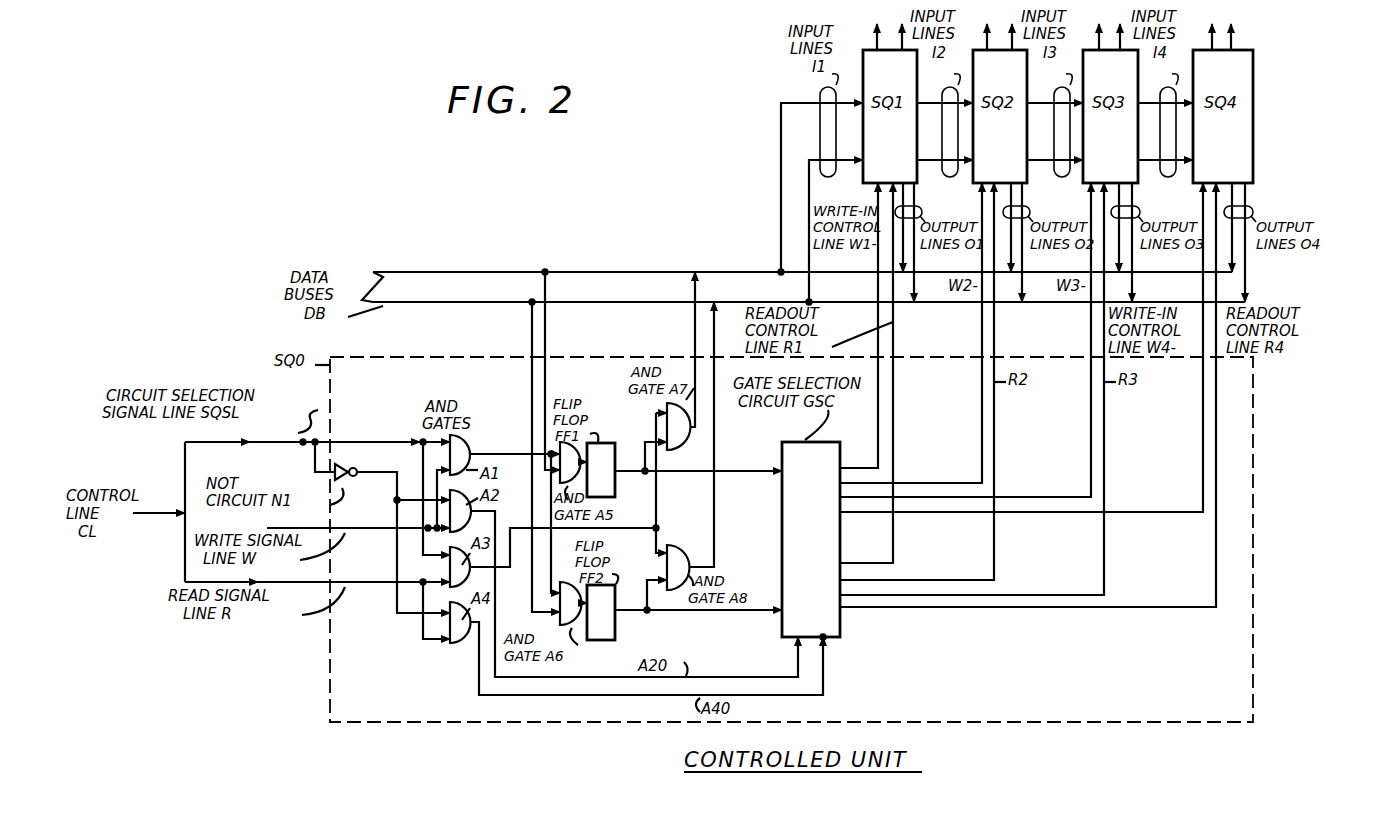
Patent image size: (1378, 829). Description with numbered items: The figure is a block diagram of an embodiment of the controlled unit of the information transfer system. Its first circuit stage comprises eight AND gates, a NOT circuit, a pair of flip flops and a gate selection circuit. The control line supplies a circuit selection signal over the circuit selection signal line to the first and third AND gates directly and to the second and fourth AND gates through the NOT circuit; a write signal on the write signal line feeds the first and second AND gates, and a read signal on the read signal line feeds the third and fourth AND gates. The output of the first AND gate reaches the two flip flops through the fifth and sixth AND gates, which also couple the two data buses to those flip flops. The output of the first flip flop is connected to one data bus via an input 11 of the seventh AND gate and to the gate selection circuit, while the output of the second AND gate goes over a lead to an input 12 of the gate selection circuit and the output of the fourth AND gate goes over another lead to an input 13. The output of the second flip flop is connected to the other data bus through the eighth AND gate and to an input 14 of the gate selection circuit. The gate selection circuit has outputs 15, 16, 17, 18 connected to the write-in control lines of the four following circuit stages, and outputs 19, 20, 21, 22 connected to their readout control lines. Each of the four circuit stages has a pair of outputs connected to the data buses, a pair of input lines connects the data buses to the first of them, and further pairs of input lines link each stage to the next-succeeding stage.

The input of the AND gate A7 11 is at (775, 470).
The input of the gate selection circuit 12 is at (798, 660).
The input of the gate selection circuit 13 is at (824, 672).
The input of the gate selection circuit 14 is at (778, 615).
The output of the gate selection circuit 15 is at (842, 468).
The output of the gate selection circuit 16 is at (843, 483).
The output of the gate selection circuit 17 is at (843, 497).
The output of the gate selection circuit 18 is at (843, 512).
The output of the gate selection circuit 19 is at (843, 563).
The output of the gate selection circuit 20 is at (843, 580).
The output of the gate selection circuit 21 is at (845, 597).
The output of the gate selection circuit 22 is at (843, 612).